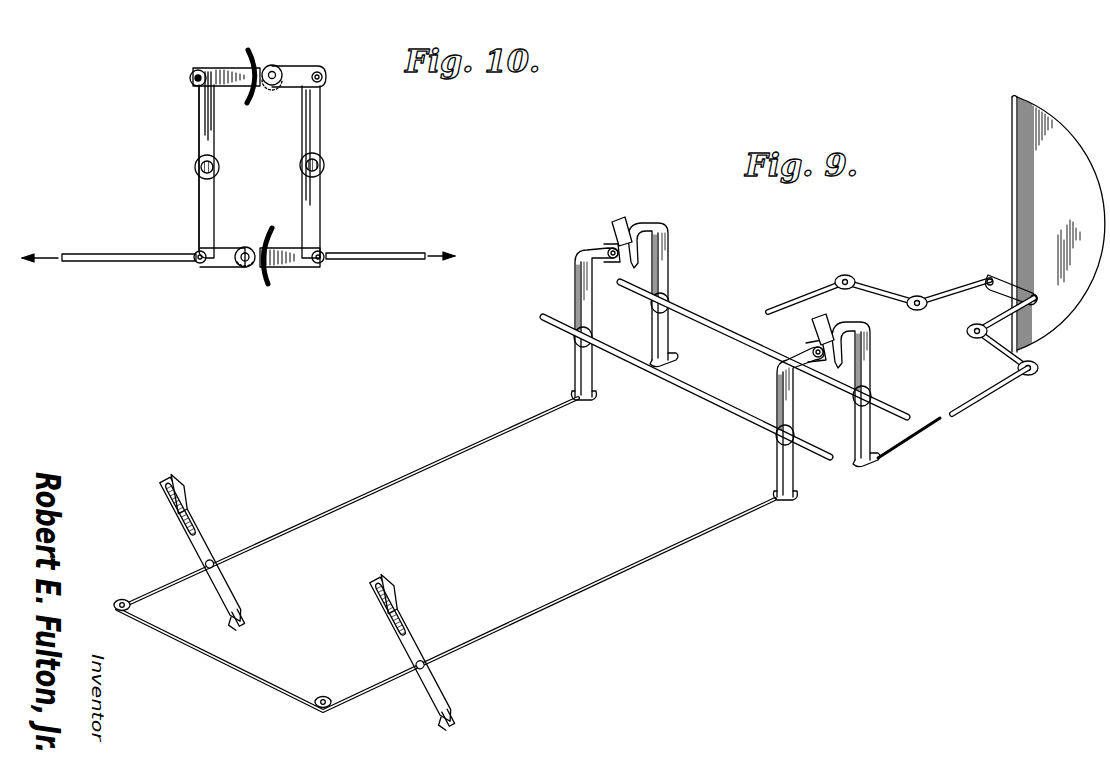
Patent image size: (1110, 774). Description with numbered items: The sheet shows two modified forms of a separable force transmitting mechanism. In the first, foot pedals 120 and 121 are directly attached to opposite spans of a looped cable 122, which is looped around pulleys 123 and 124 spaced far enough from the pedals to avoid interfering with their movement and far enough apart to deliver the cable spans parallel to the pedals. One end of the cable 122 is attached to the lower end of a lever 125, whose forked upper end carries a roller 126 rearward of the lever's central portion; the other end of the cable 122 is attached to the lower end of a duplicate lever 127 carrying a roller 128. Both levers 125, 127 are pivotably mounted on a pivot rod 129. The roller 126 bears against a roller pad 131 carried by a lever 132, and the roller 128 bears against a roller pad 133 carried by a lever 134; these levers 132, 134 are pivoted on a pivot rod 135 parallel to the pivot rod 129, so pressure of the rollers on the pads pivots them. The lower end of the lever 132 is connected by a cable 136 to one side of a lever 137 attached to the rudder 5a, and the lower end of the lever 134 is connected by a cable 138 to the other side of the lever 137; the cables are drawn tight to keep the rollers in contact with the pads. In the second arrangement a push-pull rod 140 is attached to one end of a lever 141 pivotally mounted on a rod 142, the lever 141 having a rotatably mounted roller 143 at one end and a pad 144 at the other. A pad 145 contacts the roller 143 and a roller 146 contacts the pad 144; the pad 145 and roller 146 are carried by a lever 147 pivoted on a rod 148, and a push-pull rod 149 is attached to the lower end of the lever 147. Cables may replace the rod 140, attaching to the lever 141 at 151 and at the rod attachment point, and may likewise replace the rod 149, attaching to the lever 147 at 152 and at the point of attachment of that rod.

In FIG. 9, the rudder 5a is at (1032, 128).
In FIG. 9, the foot pedal 120 is at (413, 640).
In FIG. 9, the foot pedal 121 is at (225, 592).
In FIG. 9, the looped cable 122 is at (347, 496).
In FIG. 9, the pulley 123 is at (132, 606).
In FIG. 9, the pulley 124 is at (331, 683).
In FIG. 9, the lever 125 is at (576, 376).
In FIG. 9, the roller 126 is at (607, 248).
In FIG. 9, the lever 127 is at (777, 465).
In FIG. 9, the roller 128 is at (812, 338).
In FIG. 9, the pivot rod 129 is at (711, 405).
In FIG. 9, the roller pad 131 is at (641, 216).
In FIG. 9, the lever 132 is at (670, 270).
In FIG. 9, the roller pad 133 is at (825, 320).
In FIG. 9, the lever 134 is at (873, 366).
In FIG. 9, the pivot rod 135 is at (695, 310).
In FIG. 9, the cable 136 is at (792, 302).
In FIG. 9, the lever 137 is at (1006, 275).
In FIG. 9, the cable 138 is at (965, 418).
In FIG. 10, the push-pull rod 140 is at (146, 263).
In FIG. 10, the lever 141 is at (203, 213).
In FIG. 10, the rod 142 is at (195, 167).
In FIG. 10, the roller 143 is at (245, 268).
In FIG. 10, the pad 144 is at (249, 53).
In FIG. 10, the pad 145 is at (270, 284).
In FIG. 10, the roller 146 is at (273, 65).
In FIG. 10, the lever 147 is at (319, 203).
In FIG. 10, the rod 148 is at (324, 165).
In FIG. 10, the push-pull rod 149 is at (374, 261).
In FIG. 10, the attachment point 151 is at (190, 78).
In FIG. 10, the attachment point 152 is at (322, 82).